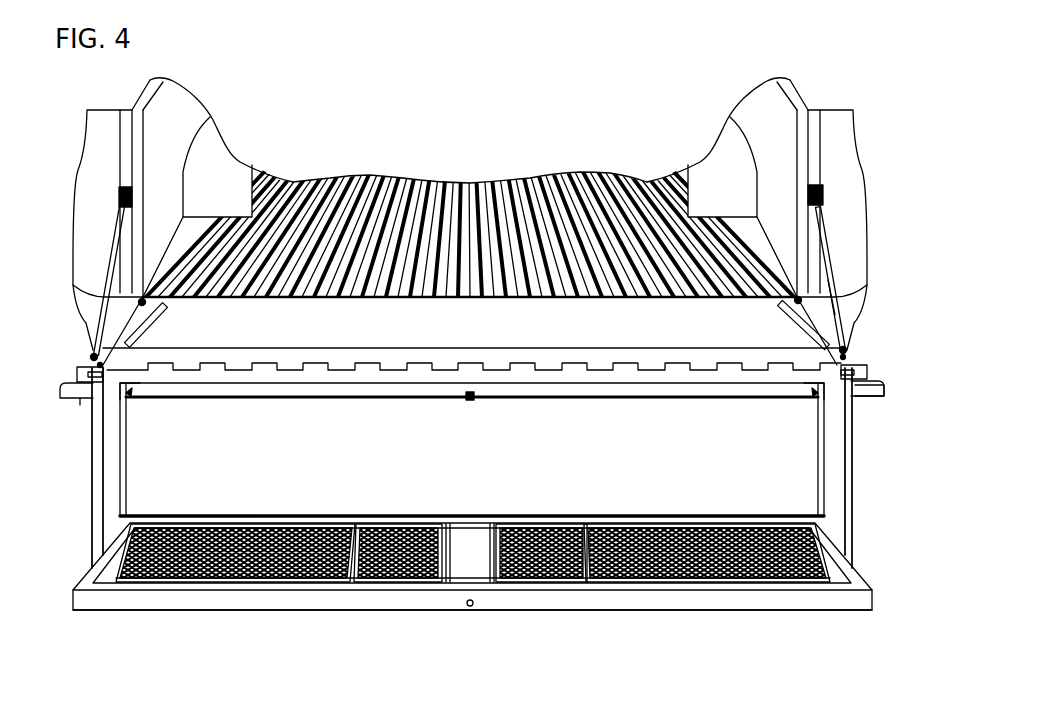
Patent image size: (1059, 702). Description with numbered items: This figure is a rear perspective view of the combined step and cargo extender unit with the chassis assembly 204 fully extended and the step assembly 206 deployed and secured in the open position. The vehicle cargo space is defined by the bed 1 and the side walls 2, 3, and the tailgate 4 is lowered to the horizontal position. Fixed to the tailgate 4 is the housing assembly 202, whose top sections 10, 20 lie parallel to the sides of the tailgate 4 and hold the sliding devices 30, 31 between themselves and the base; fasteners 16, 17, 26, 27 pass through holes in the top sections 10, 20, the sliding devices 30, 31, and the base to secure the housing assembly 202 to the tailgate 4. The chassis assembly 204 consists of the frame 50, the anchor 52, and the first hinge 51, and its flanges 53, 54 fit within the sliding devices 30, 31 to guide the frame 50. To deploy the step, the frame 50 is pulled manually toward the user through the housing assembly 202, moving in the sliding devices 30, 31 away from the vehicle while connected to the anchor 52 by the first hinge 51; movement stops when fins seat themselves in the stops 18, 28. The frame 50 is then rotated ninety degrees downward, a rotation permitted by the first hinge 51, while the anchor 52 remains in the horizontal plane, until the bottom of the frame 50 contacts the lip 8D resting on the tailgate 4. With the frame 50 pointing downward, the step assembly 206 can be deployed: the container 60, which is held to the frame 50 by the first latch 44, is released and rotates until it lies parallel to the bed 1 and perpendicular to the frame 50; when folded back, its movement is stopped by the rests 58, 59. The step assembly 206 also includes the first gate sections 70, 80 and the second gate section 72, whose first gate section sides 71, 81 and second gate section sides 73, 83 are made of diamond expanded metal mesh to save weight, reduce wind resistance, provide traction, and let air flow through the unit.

The bed 1 is at (407, 183).
The side wall 2 is at (752, 113).
The side wall 3 is at (193, 107).
The tailgate 4 is at (883, 387).
The lip 8D is at (85, 400).
The top section 10 is at (815, 332).
The fastener 16 is at (92, 352).
The fastener 17 is at (160, 293).
The stop 18 is at (835, 333).
The top section 20 is at (130, 327).
The fastener 26 is at (820, 253).
The fastener 27 is at (853, 347).
The stop 28 is at (92, 310).
The sliding device 30 is at (867, 373).
The sliding device 31 is at (80, 377).
The first latch 44 is at (473, 607).
The frame 50 is at (553, 377).
The first hinge 51 is at (500, 370).
The anchor 52 is at (435, 353).
The flange 53 is at (848, 452).
The flange 54 is at (93, 515).
The rest 58 is at (127, 394).
The rest 59 is at (816, 394).
The container 60 is at (632, 608).
The first gate section 70 is at (173, 587).
The first gate section side 71 is at (173, 540).
The second gate section 72 is at (353, 583).
The second gate section side 73 is at (392, 522).
The first gate section 80 is at (830, 570).
The first gate section side 81 is at (645, 522).
The second gate section side 83 is at (543, 522).
The housing assembly 202 is at (823, 290).
The chassis assembly 204 is at (88, 500).
The step assembly 206 is at (425, 610).